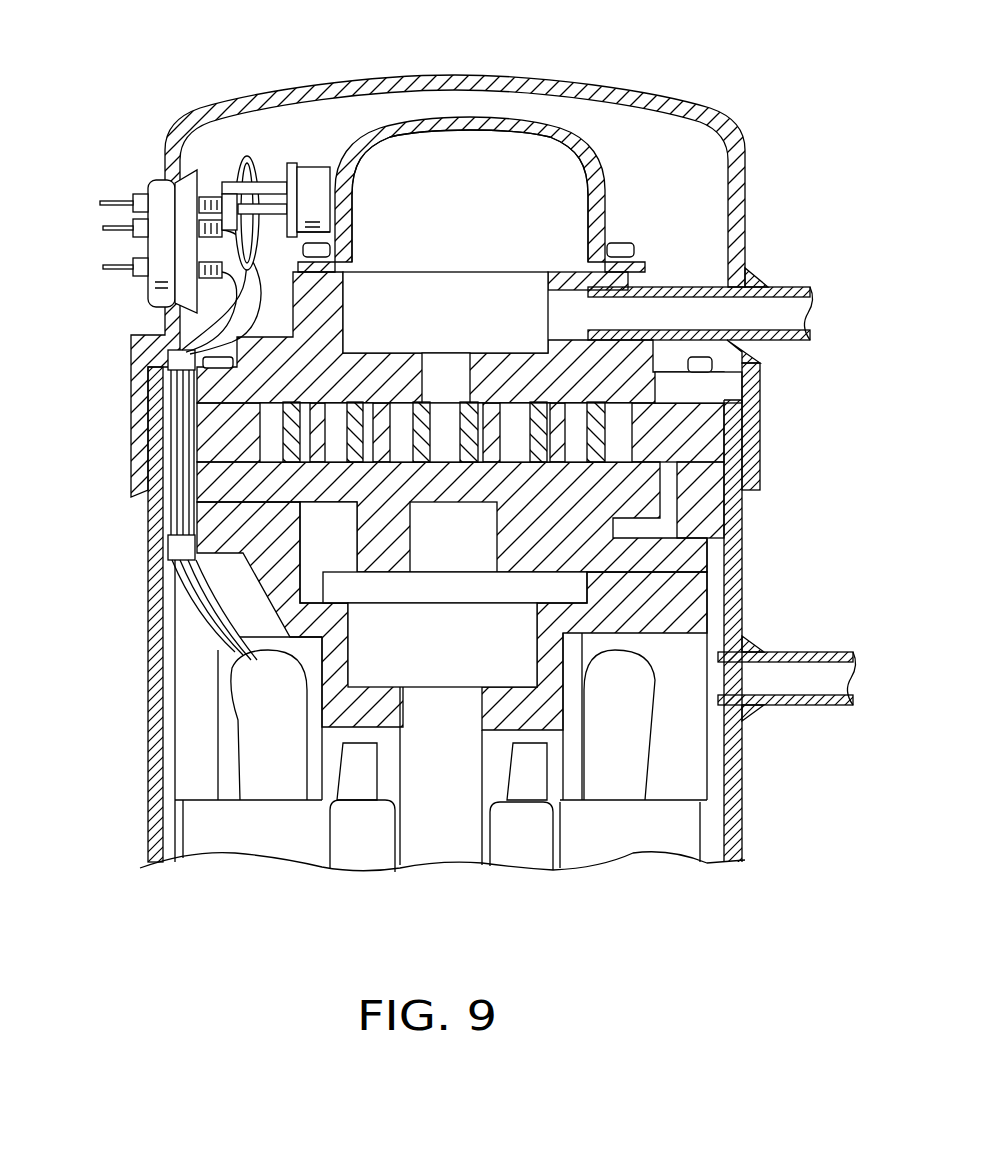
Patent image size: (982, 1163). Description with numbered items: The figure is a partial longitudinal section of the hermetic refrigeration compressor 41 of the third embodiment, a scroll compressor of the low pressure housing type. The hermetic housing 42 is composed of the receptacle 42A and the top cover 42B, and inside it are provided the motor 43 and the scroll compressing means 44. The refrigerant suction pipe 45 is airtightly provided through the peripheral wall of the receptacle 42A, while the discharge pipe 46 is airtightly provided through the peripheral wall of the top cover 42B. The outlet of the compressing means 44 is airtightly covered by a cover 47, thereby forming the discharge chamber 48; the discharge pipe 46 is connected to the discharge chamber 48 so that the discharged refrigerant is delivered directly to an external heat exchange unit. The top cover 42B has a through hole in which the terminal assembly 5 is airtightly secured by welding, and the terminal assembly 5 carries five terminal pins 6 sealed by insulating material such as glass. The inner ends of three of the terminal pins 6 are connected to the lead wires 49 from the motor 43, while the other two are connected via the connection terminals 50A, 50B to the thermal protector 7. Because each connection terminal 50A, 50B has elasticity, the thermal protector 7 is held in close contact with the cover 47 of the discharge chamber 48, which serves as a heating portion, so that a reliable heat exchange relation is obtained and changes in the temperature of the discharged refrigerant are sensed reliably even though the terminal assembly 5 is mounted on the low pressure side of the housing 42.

The terminal assembly 5 is at (168, 293).
The terminal pins 6 is at (97, 230).
The thermal protector 7 is at (318, 170).
The hermetic refrigeration compressor 41 is at (742, 127).
The hermetic housing 42 is at (742, 568).
The receptacle 42A is at (736, 522).
The top cover 42B is at (753, 456).
The motor 43 is at (655, 830).
The scroll compressing means 44 is at (675, 433).
The refrigerant suction pipe 45 is at (822, 652).
The discharge pipe 46 is at (785, 287).
The cover 47 is at (597, 135).
The discharge chamber 48 is at (480, 150).
The lead wires 49 is at (205, 615).
The connection terminal 50A is at (247, 160).
The connection terminal 50B is at (197, 322).